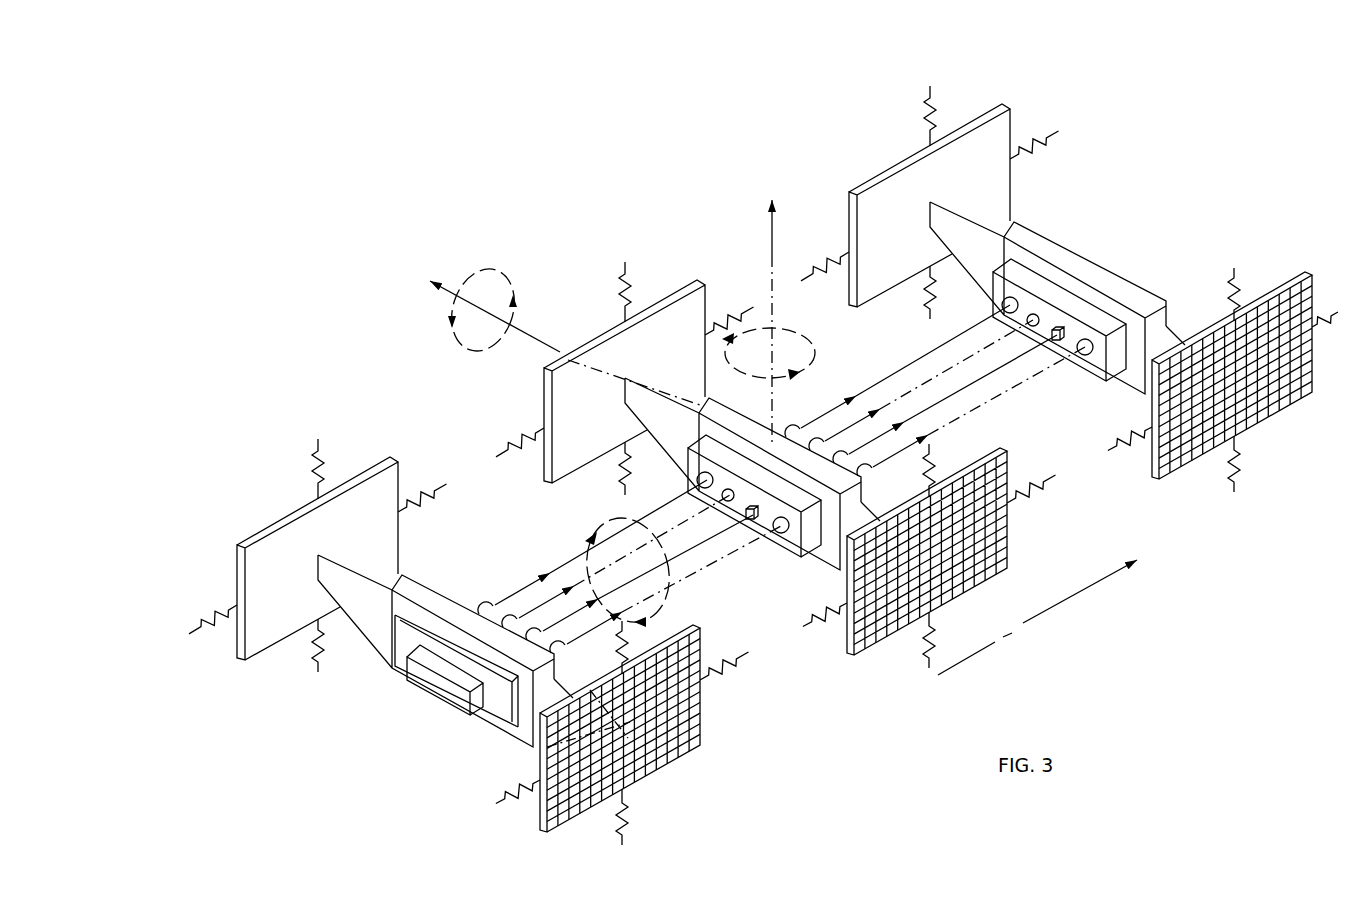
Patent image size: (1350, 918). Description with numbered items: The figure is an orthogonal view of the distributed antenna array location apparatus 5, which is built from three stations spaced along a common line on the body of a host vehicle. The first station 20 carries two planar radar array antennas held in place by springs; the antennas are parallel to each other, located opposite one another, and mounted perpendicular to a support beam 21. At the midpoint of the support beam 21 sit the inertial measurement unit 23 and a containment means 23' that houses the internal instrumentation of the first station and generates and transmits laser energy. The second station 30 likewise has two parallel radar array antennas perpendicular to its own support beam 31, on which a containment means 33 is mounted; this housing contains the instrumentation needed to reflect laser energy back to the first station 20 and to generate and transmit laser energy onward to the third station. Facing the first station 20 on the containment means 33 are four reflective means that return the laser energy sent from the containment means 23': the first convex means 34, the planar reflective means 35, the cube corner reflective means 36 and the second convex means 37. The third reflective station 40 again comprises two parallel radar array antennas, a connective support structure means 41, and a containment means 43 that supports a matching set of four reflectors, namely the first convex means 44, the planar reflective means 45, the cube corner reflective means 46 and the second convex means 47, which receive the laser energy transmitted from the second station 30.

The distributed antenna array location apparatus 5 is at (766, 473).
The first station 20 is at (469, 646).
The support beam 21 is at (445, 651).
The inertial measurement unit 23 is at (445, 694).
The containment means 23' is at (478, 617).
The second station 30 is at (773, 469).
The support beam 31 is at (752, 474).
The containment means 33 is at (754, 513).
The first convex means 34 is at (678, 485).
The planar reflective means 35 is at (700, 506).
The cube corner reflective means 36 is at (740, 551).
The second convex means 37 is at (770, 546).
The third reflective station 40 is at (1072, 295).
The support structure means 41 is at (1057, 298).
The containment means 43 is at (1059, 336).
The first convex means 44 is at (1035, 258).
The planar reflective means 45 is at (1069, 269).
The cube corner reflective means 46 is at (1086, 289).
The second convex means 47 is at (1066, 376).